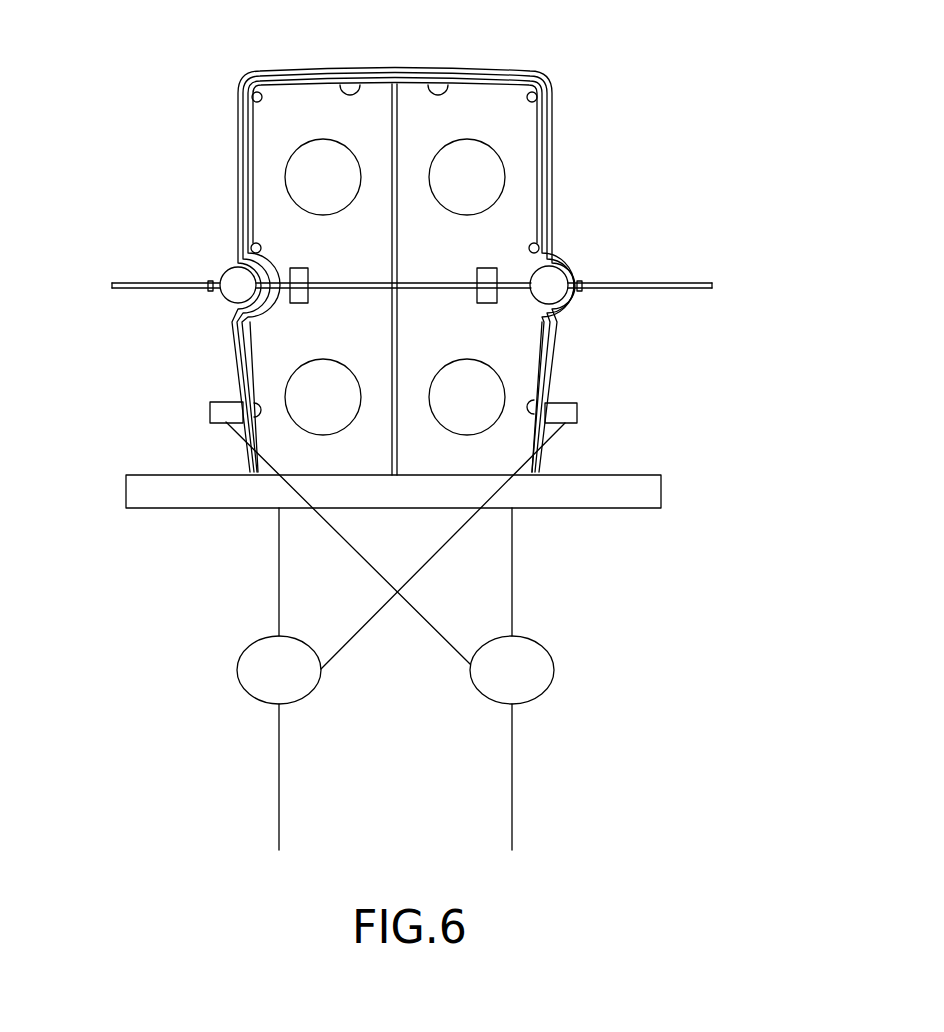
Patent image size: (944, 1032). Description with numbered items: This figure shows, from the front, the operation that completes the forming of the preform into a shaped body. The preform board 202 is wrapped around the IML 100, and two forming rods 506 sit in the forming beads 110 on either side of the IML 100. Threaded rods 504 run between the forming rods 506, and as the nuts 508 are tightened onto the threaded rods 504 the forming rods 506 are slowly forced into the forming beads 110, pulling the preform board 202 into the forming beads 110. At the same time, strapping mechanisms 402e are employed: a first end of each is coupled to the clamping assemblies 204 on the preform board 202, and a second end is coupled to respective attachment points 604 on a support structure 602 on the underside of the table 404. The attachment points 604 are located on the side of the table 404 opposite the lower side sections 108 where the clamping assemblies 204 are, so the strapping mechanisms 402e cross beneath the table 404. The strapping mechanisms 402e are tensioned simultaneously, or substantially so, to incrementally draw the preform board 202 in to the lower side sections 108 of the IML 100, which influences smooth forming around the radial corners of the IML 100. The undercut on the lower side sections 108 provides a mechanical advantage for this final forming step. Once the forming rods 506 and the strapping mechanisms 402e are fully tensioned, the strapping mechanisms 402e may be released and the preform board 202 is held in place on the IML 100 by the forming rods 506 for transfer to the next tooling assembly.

The IML 100 is at (488, 107).
The preform board 202 is at (568, 162).
The forming beads 110 is at (245, 262).
The forming rods 506 is at (222, 275).
The threaded rods 504 is at (712, 283).
The nuts 508 is at (212, 290).
The clamping assemblies 204 is at (207, 415).
The lower side sections 108 is at (248, 440).
The table 404 is at (133, 497).
The strapping mechanisms 402e is at (330, 540).
The support structure 602 is at (280, 603).
The attachment points 604 is at (280, 672).